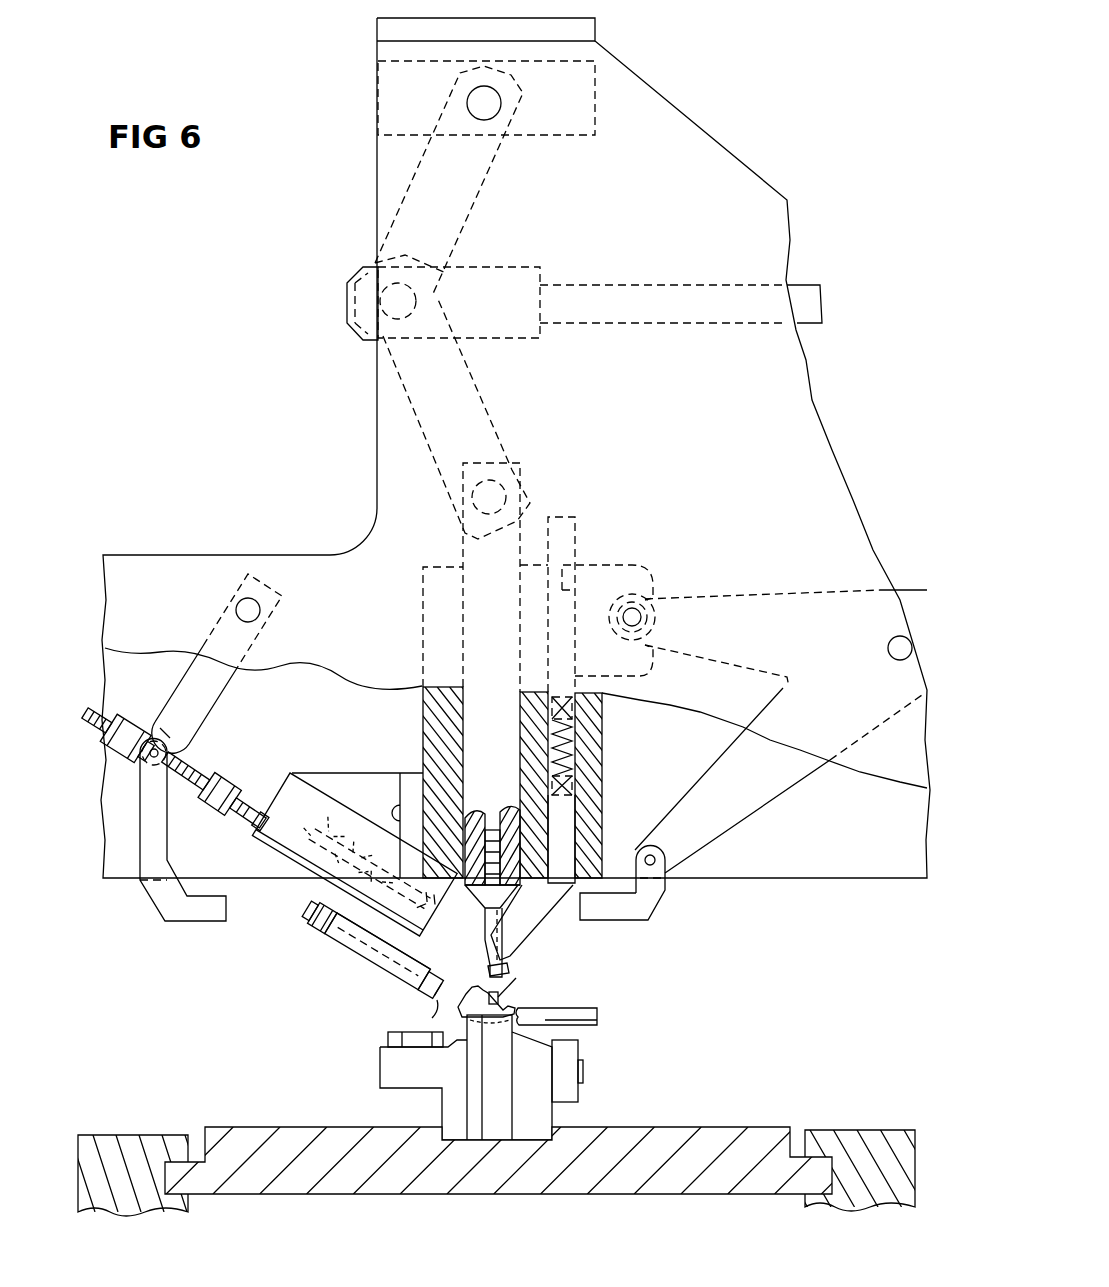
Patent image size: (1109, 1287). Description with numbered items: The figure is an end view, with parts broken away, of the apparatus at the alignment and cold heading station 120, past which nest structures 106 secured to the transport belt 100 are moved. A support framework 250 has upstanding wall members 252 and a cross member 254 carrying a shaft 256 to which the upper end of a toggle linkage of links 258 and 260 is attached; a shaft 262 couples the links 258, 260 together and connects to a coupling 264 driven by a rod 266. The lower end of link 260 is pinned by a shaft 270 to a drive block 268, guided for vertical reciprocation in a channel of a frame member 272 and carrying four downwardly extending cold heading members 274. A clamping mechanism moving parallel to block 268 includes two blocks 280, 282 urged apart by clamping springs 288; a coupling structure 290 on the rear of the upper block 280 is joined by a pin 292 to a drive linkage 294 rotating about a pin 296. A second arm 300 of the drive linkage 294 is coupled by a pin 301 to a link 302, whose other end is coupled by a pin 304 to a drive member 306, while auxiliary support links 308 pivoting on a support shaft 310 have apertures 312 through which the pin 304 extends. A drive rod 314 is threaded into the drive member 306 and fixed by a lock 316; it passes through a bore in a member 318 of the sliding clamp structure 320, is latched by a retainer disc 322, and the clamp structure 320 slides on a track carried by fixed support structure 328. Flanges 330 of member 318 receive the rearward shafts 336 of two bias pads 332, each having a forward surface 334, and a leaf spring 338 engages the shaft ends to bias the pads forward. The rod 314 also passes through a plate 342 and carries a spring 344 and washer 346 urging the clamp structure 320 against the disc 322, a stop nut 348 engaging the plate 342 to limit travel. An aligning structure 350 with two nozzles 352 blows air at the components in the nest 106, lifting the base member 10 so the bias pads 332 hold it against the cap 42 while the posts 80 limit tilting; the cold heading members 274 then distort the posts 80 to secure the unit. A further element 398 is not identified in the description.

The base member 10 is at (474, 986).
The cap 42 is at (465, 1015).
The posts 80 is at (498, 990).
The transport belt 100 is at (282, 1124).
The nest structure 106 is at (380, 1066).
The alignment and cold heading station 120 is at (236, 296).
The support framework 250 is at (702, 138).
The upstanding wall members 252 is at (377, 452).
The cross member 254 is at (377, 34).
The shaft 256 is at (501, 101).
The link 258 is at (492, 176).
The link 260 is at (485, 393).
The shaft 262 is at (352, 300).
The coupling 264 is at (348, 281).
The rod 266 is at (808, 285).
The drive block 268 is at (509, 750).
The shaft 270 is at (506, 482).
The frame member 272 is at (422, 722).
The cold heading members 274 is at (485, 930).
The upper block 280 is at (574, 516).
The lower block 282 is at (565, 815).
The clamping springs 288 is at (576, 742).
The coupling structure 290 is at (600, 565).
The pin 292 is at (618, 632).
The drive linkage 294 is at (768, 590).
The pin 296 is at (900, 636).
The second arm 300 is at (762, 795).
The pin 301 is at (658, 861).
The link 302 is at (650, 907).
The pin 304 is at (178, 748).
The drive member 306 is at (182, 753).
The auxiliary support links 308 is at (222, 686).
The support shaft 310 is at (259, 605).
The apertures 312 is at (164, 725).
The drive rod 314 is at (198, 772).
The lock 316 is at (133, 728).
The member 318 is at (330, 902).
The clamp structure 320 is at (330, 954).
The retainer disc 322 is at (438, 908).
The fixed support structure 328 is at (350, 775).
The flanges 330 is at (365, 966).
The bias pads 332 is at (416, 999).
The forward surface 334 is at (418, 1015).
The shaft 336 is at (318, 940).
The leaf spring 338 is at (305, 923).
The plate 342 is at (292, 772).
The spring 344 is at (352, 853).
The washer 346 is at (266, 803).
The stop nut 348 is at (222, 808).
The aligning structure 350 is at (600, 1005).
The nozzles 352 is at (505, 1003).
The arm 398 is at (528, 928).